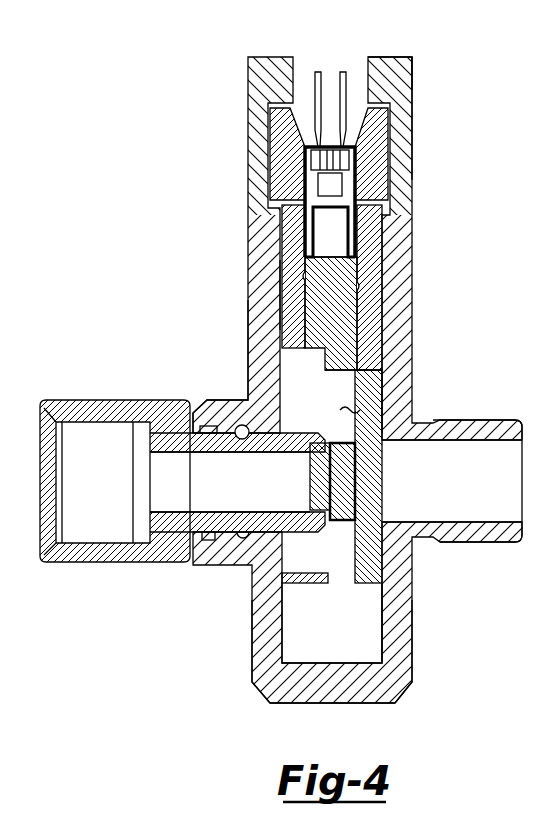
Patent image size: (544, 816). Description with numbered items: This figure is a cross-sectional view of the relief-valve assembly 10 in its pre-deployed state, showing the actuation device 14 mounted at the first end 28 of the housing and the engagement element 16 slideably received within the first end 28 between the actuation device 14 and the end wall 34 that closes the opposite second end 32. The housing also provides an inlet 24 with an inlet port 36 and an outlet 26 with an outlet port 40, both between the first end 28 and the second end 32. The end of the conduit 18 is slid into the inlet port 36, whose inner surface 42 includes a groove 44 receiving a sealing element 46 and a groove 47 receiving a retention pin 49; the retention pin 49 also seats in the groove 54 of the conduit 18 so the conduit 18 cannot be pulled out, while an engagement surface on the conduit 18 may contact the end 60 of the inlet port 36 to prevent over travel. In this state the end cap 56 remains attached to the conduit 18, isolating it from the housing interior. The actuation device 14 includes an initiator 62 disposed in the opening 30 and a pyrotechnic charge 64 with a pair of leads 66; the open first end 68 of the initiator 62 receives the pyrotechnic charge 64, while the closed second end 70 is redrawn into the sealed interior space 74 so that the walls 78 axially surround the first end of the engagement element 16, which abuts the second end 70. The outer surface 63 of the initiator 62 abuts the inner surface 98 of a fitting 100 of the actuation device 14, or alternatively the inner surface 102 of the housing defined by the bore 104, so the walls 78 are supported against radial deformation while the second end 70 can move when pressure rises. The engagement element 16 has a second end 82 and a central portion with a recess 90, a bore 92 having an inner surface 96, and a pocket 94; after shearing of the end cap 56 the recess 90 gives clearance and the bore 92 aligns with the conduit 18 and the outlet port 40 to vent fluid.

The relief-valve assembly 10 is at (128, 84).
The actuation device 14 is at (344, 134).
The engagement element 16 is at (356, 318).
The conduit 18 is at (94, 394).
The inlet 24 is at (285, 433).
The outlet 26 is at (442, 441).
The first end 28 is at (414, 106).
The opening 30 is at (400, 72).
The second end 32 is at (282, 705).
The end wall 34 is at (372, 684).
The inlet port 36 is at (244, 410).
The outlet port 40 is at (492, 420).
The inner surface 42 is at (220, 445).
The groove 44 is at (206, 426).
The sealing element 46 is at (211, 541).
The groove 47 is at (237, 426).
The retention pin 49 is at (245, 440).
The groove 54 is at (245, 540).
The end cap 56 is at (336, 478).
The end 60 is at (163, 427).
The initiator 62 is at (370, 186).
The outer surface 63 is at (310, 237).
The pyrotechnic charge 64 is at (323, 176).
The leads 66 is at (343, 72).
The first end 68 is at (300, 150).
The second end 70 is at (378, 236).
The interior space 74 is at (300, 207).
The walls 78 is at (396, 178).
The second end 82 is at (302, 588).
The recess 90 is at (308, 574).
The bore 92 is at (395, 384).
The pocket 94 is at (352, 452).
The inner surface 96 is at (362, 408).
The inner surface 98 is at (362, 292).
The fitting 100 is at (378, 268).
The inner surface 102 is at (384, 622).
The bore 104 is at (300, 660).